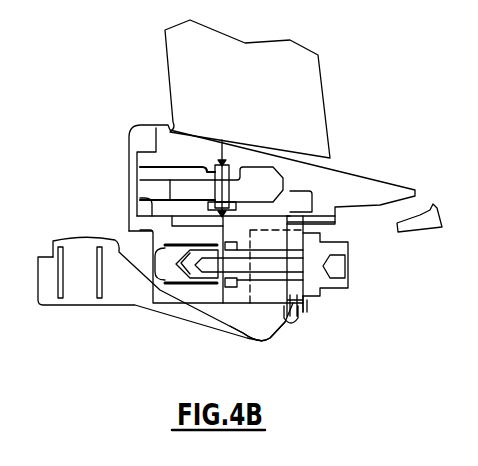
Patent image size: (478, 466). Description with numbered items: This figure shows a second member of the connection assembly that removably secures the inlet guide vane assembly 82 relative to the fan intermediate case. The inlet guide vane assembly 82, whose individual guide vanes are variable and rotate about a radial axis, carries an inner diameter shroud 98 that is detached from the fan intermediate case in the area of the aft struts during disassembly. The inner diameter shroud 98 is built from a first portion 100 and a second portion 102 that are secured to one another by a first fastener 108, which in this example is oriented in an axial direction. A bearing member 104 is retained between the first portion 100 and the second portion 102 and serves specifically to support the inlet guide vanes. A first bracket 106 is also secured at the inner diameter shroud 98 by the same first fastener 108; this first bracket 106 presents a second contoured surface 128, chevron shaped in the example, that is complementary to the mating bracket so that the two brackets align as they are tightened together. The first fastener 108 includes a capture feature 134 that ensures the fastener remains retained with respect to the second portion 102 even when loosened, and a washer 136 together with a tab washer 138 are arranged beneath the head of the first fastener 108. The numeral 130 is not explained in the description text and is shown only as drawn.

The inlet guide vane assembly 82 is at (341, 98).
The inner diameter shroud 98 is at (305, 294).
The first portion 100 is at (138, 213).
The second portion 102 is at (335, 198).
The bearing member 104 is at (310, 178).
The first bracket 106 is at (270, 343).
The first fastener 108 is at (320, 282).
The second contoured surface 128 is at (179, 300).
The slot 130 is at (62, 287).
The capture feature 134 is at (232, 303).
The washer 136 is at (297, 330).
The tab washer 138 is at (307, 303).